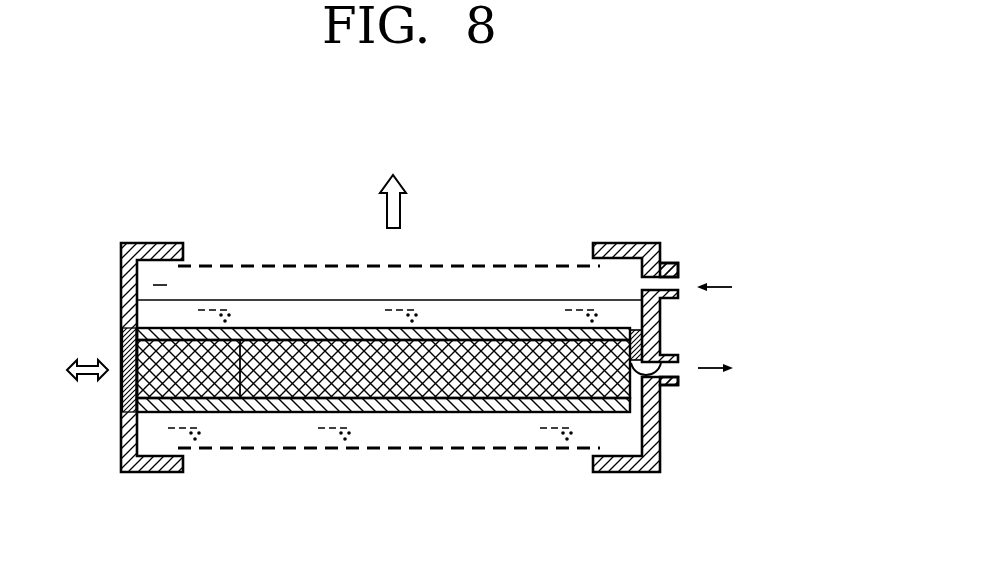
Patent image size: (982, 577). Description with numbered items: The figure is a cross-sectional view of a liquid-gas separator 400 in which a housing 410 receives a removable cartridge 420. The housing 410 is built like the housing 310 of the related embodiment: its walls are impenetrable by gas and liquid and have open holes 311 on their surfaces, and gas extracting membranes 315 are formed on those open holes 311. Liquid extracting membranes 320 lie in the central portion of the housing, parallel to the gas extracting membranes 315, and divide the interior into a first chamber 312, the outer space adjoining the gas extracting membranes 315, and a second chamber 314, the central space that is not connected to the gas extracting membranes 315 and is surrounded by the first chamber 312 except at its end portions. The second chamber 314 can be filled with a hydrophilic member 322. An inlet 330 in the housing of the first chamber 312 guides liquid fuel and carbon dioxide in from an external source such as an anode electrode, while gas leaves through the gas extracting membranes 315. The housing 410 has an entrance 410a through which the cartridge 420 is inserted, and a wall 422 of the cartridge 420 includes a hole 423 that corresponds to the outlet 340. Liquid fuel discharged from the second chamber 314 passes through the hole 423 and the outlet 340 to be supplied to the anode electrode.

The liquid-gas separator 400 is at (636, 186).
The housing 310 is at (247, 411).
The open holes 311 is at (591, 243).
The first chamber 312 is at (158, 284).
The second chamber 314 is at (353, 380).
The gas extracting membranes 315 is at (253, 265).
The liquid extracting membranes 320 is at (435, 412).
The hydrophilic member 322 is at (298, 400).
The inlet 330 is at (682, 264).
The outlet 340 is at (680, 388).
The housing 410 is at (605, 460).
The entrance 410a is at (122, 340).
The cartridge 420 is at (106, 393).
The wall of the cartridge 422 is at (661, 338).
The hole 423 is at (668, 363).